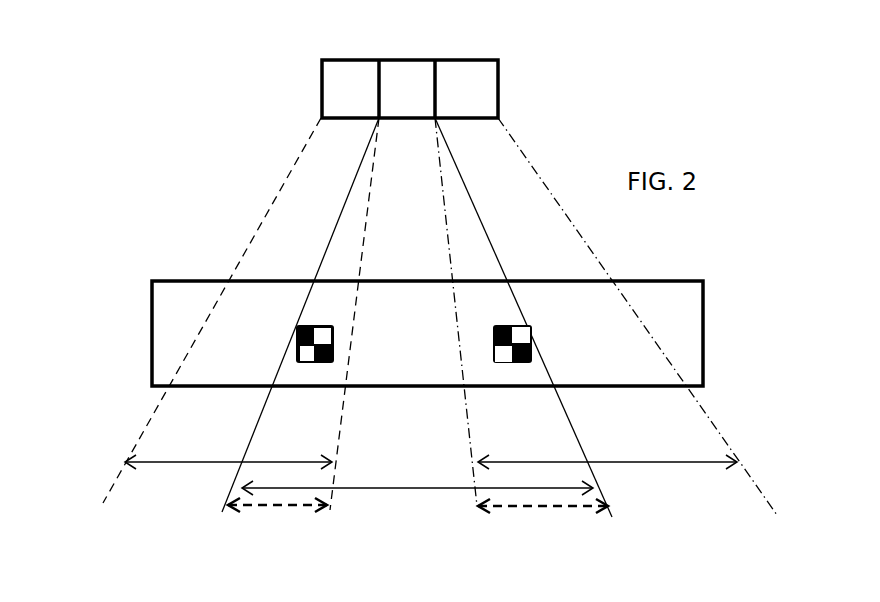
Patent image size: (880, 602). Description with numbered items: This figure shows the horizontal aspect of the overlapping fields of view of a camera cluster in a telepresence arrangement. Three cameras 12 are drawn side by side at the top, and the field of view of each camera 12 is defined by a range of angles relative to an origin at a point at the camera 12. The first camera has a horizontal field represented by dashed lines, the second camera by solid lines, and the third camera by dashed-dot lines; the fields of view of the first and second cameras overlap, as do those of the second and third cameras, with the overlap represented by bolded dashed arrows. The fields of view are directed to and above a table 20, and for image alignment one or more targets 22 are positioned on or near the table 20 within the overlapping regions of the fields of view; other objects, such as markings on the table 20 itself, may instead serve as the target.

The camera 12 is at (351, 59).
The table 20 is at (705, 333).
The target 22 is at (314, 363).